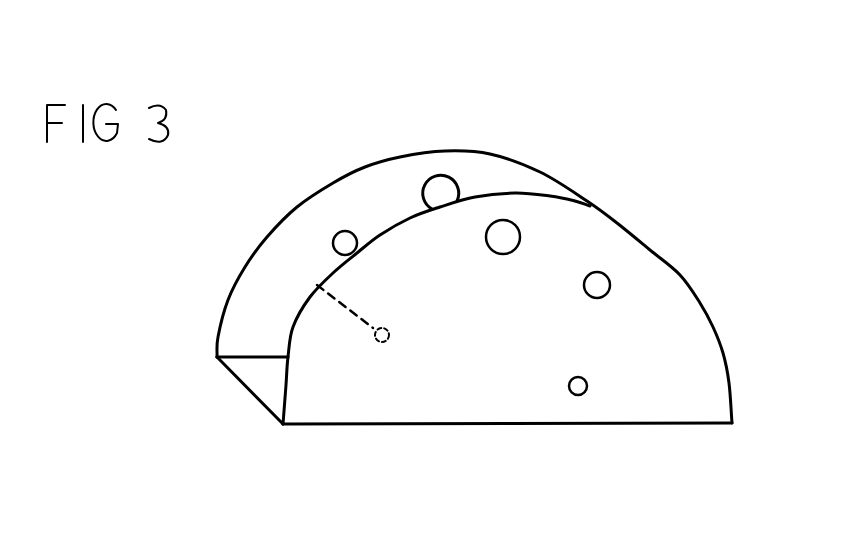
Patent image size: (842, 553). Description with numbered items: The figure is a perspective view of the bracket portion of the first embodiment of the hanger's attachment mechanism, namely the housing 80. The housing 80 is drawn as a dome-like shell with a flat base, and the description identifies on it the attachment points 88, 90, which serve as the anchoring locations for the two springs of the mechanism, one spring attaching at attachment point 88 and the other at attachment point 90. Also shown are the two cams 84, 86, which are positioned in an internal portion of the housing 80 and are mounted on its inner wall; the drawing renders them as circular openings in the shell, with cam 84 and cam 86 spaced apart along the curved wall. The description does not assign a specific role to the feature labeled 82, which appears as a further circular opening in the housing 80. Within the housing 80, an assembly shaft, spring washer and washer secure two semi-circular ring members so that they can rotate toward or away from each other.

The housing 80 is at (460, 96).
The aperture 82 is at (510, 227).
The cam 84 is at (597, 298).
The cam 86 is at (338, 231).
The attachment point 88 is at (578, 395).
The attachment point 90 is at (317, 285).